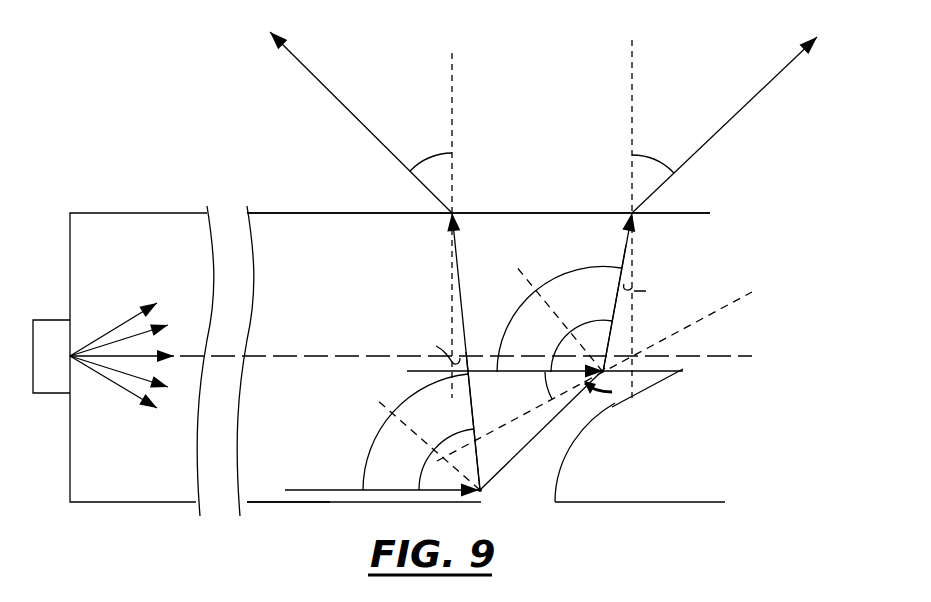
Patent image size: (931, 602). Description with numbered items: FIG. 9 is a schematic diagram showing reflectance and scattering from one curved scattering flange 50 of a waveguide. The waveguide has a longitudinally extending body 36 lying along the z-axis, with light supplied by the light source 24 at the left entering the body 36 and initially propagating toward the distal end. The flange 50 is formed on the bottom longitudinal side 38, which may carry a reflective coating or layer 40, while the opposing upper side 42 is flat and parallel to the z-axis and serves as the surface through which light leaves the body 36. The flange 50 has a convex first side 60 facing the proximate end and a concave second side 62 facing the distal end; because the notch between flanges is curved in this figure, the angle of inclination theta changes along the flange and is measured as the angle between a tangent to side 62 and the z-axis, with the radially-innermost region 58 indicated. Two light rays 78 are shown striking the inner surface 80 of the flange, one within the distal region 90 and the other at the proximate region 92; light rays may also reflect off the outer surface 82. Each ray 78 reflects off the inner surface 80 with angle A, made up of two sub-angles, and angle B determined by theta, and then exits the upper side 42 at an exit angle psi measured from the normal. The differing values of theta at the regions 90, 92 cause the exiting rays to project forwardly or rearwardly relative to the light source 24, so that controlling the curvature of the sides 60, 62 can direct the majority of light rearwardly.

The light source 24 is at (47, 375).
The body 36 is at (278, 222).
The longitudinal side 38 is at (263, 503).
The reflective coating or layer 40 is at (702, 503).
The opposing side 42 is at (370, 216).
The scattering flange 50 is at (367, 500).
The radially-innermost region 58 is at (663, 366).
The first surface or side 60 is at (585, 432).
The second surface or side 62 is at (515, 440).
The light ray 78 is at (308, 490).
The inner surface 80 is at (496, 456).
The outer surface 82 is at (620, 406).
The distal region 90 is at (497, 486).
The proximate region 92 is at (612, 392).